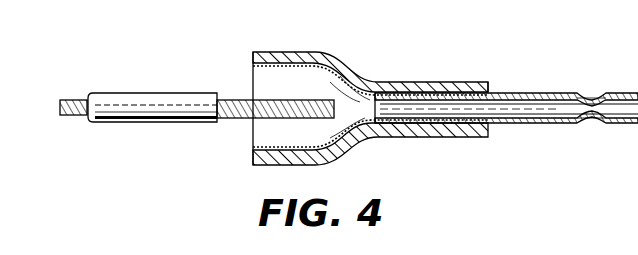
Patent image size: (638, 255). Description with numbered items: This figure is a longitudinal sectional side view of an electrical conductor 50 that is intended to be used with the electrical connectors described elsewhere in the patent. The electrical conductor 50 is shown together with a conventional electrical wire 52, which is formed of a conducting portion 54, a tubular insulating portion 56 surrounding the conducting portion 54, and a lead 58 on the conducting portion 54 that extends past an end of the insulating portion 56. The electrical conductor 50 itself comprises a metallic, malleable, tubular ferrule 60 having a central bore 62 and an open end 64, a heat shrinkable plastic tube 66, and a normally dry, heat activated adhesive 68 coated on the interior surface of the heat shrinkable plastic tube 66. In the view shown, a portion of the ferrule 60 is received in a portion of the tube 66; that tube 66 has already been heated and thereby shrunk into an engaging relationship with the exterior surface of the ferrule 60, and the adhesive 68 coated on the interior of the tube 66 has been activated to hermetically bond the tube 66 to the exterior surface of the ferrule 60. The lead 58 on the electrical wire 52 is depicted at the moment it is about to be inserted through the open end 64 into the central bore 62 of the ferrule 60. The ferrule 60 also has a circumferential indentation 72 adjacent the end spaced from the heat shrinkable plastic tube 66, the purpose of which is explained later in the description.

The electrical conductor 50 is at (377, 89).
The electrical wire 52 is at (162, 88).
The conducting portion 54 is at (78, 99).
The tubular insulating portion 56 is at (123, 92).
The lead 58 is at (240, 98).
The tubular ferrule 60 is at (548, 62).
The central bore 62 is at (497, 138).
The open end 64 is at (370, 132).
The heat shrinkable plastic tube 66 is at (331, 52).
The heat activated adhesive 68 is at (492, 80).
The circumferential indentation 72 is at (590, 97).